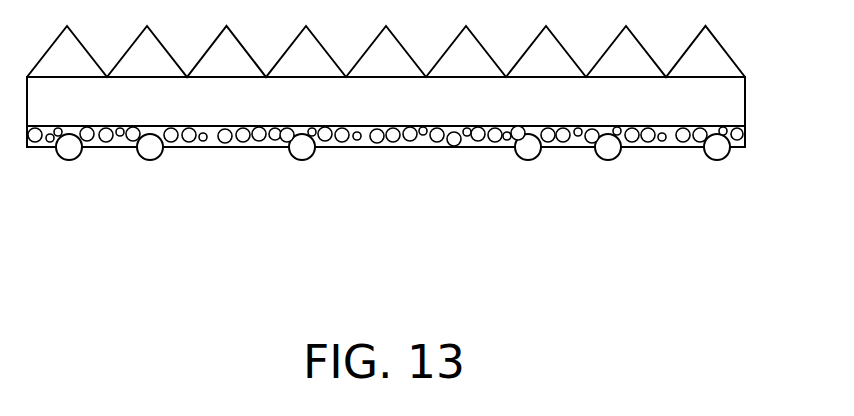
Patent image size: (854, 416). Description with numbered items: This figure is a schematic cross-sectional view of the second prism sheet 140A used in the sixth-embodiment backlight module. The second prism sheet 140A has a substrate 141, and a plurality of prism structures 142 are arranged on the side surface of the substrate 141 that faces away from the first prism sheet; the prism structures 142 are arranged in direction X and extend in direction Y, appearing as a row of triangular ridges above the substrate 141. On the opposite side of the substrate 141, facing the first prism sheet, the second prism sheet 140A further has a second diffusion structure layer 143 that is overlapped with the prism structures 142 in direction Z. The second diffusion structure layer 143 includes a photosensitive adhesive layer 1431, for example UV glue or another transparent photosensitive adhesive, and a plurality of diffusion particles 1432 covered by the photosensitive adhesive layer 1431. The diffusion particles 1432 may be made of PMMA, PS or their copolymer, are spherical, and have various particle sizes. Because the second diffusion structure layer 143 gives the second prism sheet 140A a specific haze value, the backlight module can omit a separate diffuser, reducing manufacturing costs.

The second prism sheet 140A is at (818, 310).
The substrate 141 is at (720, 105).
The prism structures 142 is at (715, 62).
The second diffusion structure layer 143 is at (386, 194).
The photosensitive adhesive layer 1431 is at (578, 142).
The diffusion particles 1432 is at (545, 212).